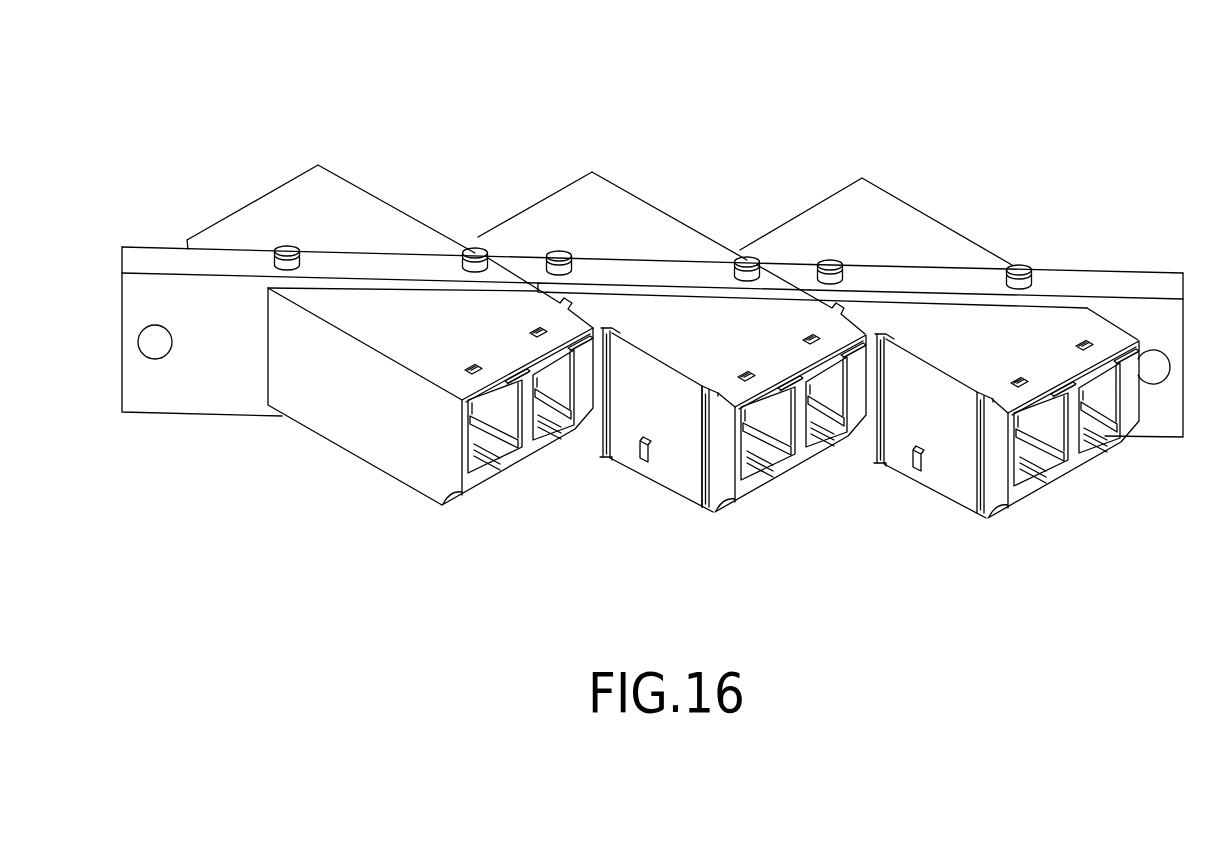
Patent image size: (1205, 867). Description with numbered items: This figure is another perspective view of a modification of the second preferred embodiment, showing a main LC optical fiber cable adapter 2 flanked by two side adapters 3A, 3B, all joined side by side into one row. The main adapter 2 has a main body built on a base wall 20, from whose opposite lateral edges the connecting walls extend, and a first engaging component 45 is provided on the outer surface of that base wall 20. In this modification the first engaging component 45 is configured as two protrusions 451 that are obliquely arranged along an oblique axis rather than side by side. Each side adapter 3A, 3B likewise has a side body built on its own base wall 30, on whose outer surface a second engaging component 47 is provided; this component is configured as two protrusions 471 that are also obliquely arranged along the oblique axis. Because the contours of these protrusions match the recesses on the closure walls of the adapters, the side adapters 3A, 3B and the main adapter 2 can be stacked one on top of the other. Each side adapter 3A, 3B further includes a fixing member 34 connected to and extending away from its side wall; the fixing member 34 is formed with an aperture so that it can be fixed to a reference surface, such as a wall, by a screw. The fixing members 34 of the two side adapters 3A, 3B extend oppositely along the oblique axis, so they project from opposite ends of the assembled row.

The LC optical fiber cable adapter 2 is at (620, 148).
The side adapter 3A is at (898, 154).
The side adapter 3B is at (338, 160).
The base wall 20 is at (588, 190).
The base wall 30 is at (296, 188).
The fixing member 34 is at (143, 256).
The first engaging component 45 is at (747, 252).
The protrusions 451 is at (565, 252).
The second engaging component 47 is at (478, 240).
The protrusions 471 is at (472, 249).